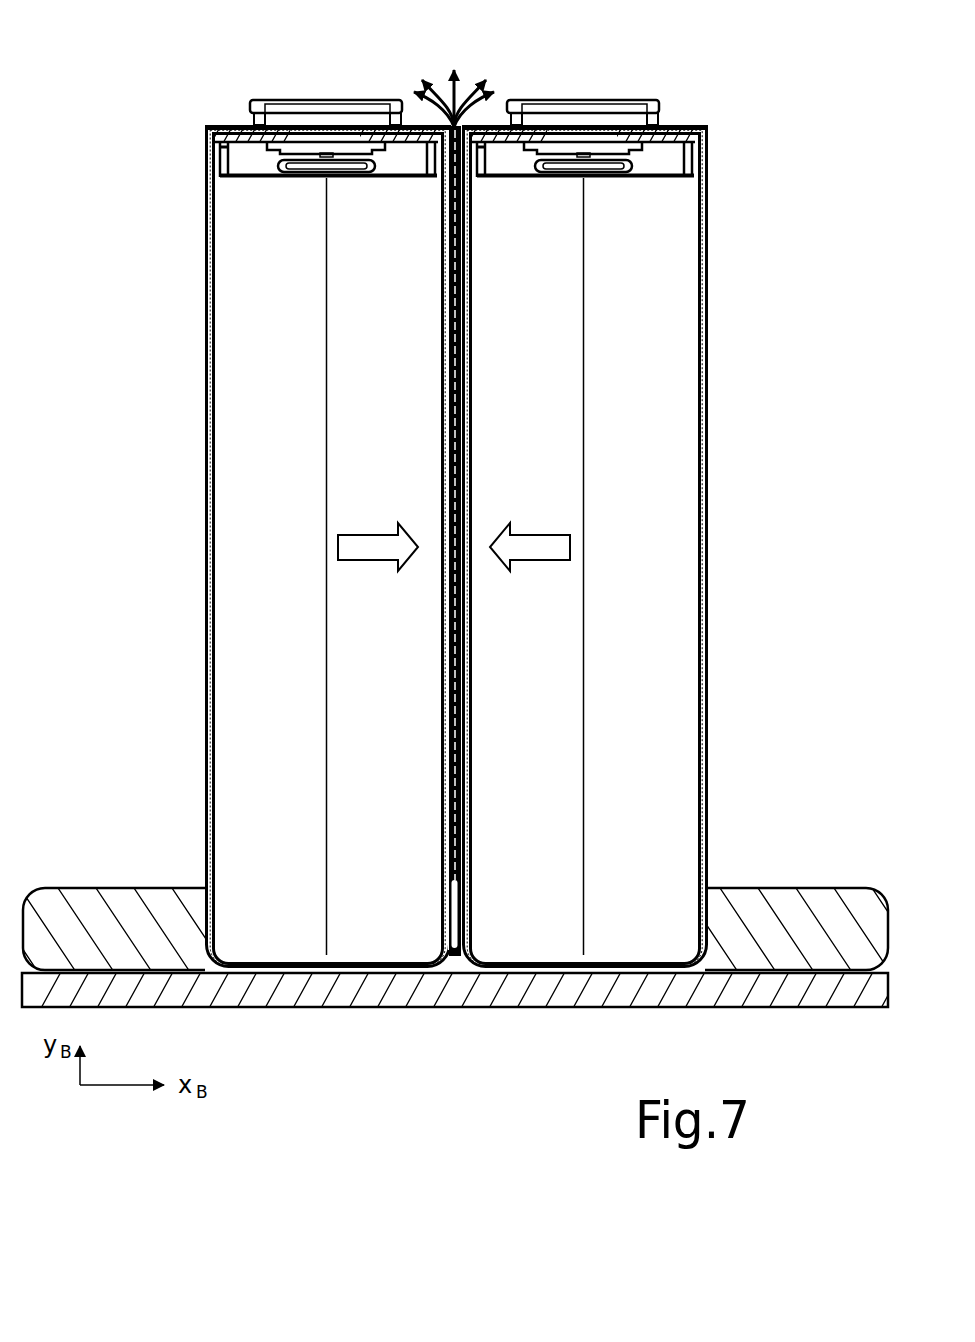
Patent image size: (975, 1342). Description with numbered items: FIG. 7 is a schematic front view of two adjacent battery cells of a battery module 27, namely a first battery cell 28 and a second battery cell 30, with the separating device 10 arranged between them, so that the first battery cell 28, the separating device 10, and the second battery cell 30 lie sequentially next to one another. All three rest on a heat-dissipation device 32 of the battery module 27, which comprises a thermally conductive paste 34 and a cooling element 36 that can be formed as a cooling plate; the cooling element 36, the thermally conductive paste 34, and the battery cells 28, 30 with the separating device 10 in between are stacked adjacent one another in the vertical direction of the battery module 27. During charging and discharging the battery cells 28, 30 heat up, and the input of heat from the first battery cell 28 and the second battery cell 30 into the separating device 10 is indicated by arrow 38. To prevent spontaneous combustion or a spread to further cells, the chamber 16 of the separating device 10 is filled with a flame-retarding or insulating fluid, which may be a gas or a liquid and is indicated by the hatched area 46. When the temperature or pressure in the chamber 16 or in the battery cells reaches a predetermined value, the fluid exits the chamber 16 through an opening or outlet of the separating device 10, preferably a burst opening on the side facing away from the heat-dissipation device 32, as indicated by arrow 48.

The battery module 27 is at (722, 96).
The first battery cell 28 is at (247, 608).
The second battery cell 30 is at (677, 660).
The chamber 16 is at (478, 647).
The separating device 10 is at (462, 203).
The arrow 48 is at (443, 82).
The arrow 38 is at (373, 543).
The hatched area 46 is at (465, 832).
The thermally conductive paste 34 is at (147, 905).
The cooling element 36 is at (258, 988).
The heat-dissipation device 32 is at (69, 864).